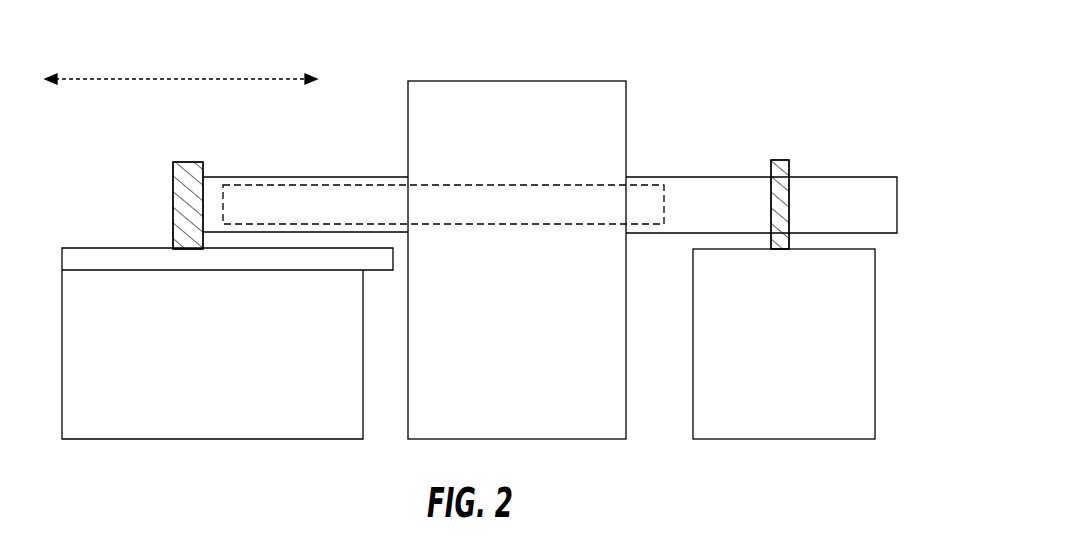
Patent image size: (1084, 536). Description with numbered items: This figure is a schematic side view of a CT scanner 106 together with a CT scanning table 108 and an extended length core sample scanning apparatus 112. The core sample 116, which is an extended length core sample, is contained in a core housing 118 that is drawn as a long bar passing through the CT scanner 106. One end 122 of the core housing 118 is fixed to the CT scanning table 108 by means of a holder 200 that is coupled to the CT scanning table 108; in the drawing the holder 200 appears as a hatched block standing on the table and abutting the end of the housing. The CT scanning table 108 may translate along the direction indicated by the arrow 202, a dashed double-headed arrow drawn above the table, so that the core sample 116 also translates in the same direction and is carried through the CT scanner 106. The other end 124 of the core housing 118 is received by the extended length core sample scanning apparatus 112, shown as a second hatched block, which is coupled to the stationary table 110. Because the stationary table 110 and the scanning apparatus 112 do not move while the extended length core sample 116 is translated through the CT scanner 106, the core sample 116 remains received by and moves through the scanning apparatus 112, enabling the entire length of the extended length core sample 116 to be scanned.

The CT scanner 106 is at (603, 80).
The CT scanning table 108 is at (80, 248).
The stationary table 110 is at (876, 345).
The extended length core sample scanning apparatus 112 is at (776, 159).
The core sample 116 is at (648, 184).
The core housing 118 is at (329, 177).
The one end of the core housing 122 is at (210, 161).
The other end of the core housing 124 is at (800, 165).
The holder 200 is at (187, 161).
The arrow 202 is at (173, 78).